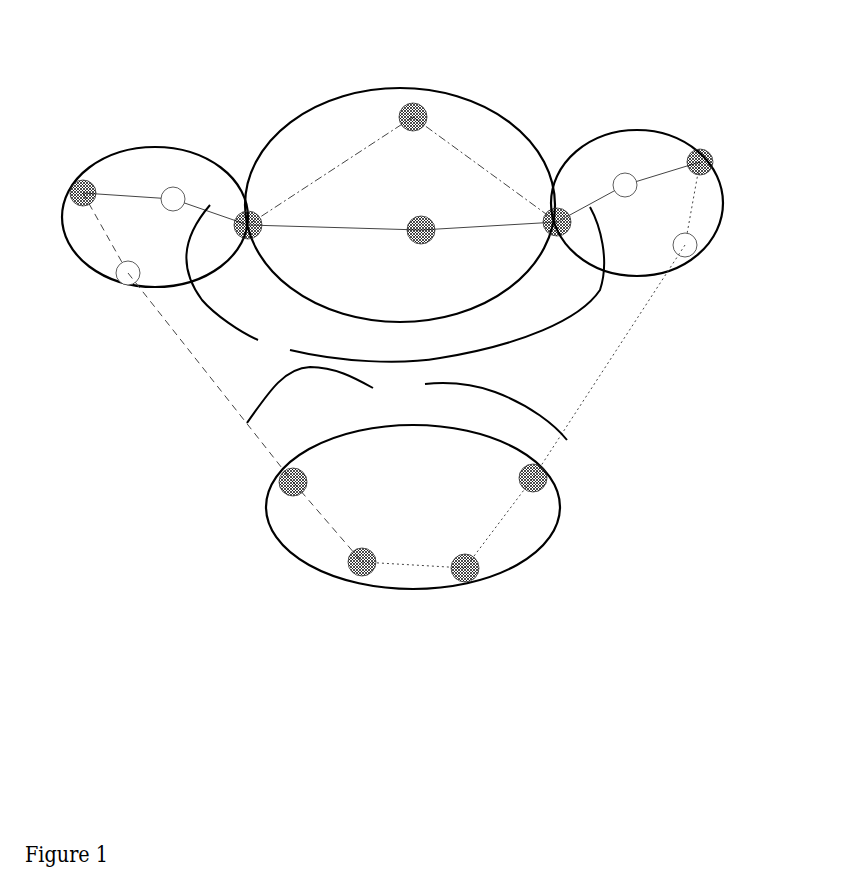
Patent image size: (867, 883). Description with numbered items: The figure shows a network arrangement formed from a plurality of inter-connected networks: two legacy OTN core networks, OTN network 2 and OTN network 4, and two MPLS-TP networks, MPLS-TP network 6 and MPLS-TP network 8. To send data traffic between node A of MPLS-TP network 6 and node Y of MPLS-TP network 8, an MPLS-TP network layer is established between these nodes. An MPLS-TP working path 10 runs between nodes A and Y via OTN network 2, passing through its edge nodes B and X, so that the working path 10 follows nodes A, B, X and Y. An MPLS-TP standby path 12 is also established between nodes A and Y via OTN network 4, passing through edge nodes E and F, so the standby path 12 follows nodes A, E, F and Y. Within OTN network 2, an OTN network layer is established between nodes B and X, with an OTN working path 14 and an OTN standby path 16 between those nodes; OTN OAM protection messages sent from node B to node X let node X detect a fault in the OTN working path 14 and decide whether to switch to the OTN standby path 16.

The OTN network 2 is at (352, 98).
The OTN network 4 is at (545, 548).
The MPLS-TP network 6 is at (113, 162).
The MPLS-TP network 8 is at (743, 38).
The MPLS-TP working path 10 is at (395, 283).
The MPLS-TP standby path 12 is at (407, 403).
The OTN working path 14 is at (477, 227).
The OTN standby path 16 is at (322, 175).